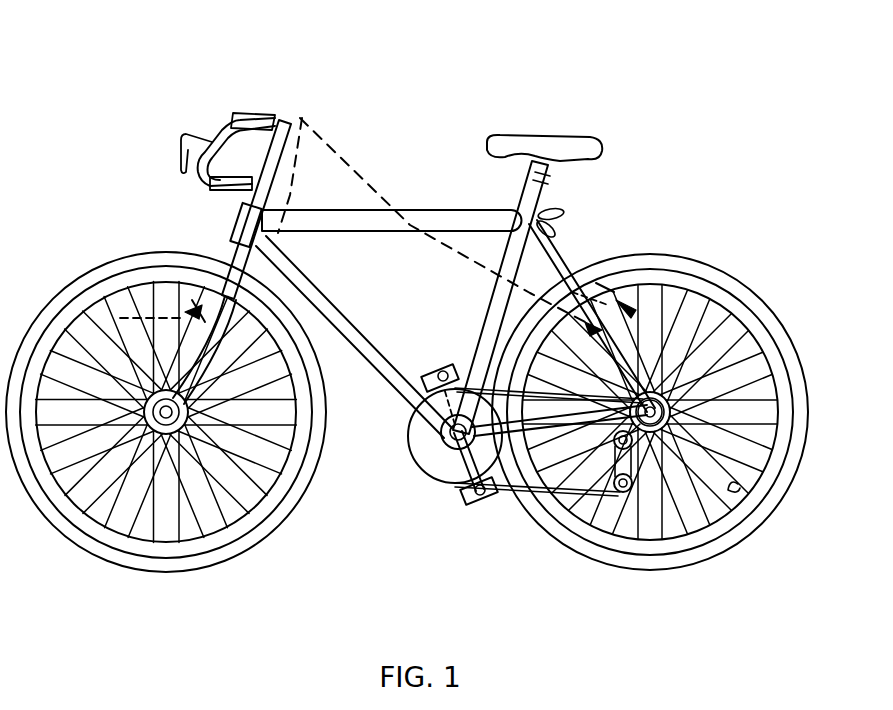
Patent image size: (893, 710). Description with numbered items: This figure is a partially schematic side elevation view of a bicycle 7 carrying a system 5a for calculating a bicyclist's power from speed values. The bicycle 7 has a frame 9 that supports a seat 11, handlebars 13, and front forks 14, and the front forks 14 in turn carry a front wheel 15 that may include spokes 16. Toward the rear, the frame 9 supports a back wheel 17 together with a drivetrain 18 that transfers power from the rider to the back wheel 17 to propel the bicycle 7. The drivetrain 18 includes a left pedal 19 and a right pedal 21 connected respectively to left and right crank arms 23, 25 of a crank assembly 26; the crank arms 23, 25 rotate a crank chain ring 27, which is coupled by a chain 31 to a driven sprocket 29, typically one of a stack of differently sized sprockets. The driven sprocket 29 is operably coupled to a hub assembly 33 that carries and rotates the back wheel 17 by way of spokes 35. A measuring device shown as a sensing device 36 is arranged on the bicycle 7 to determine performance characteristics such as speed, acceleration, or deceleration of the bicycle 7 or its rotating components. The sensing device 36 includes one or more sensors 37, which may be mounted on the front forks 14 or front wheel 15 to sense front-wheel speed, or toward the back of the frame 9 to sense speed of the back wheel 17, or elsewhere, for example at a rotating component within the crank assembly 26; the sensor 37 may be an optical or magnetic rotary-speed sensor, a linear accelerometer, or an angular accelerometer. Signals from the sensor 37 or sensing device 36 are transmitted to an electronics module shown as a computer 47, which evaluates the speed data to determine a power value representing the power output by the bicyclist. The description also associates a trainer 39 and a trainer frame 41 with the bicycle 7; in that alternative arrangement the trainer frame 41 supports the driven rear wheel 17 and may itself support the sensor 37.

The system 5a is at (228, 96).
The computer 47 is at (254, 106).
The handlebars 13 is at (213, 137).
The front forks 14 is at (232, 262).
The frame 9 is at (414, 204).
The seat 11 is at (548, 140).
The bicycle 7 is at (576, 240).
The sensor 37 is at (134, 245).
The sensing device 36 is at (56, 279).
The trainer frame 41 is at (700, 330).
The hub assembly 33 is at (722, 318).
The driven sprocket 29 is at (672, 399).
The back wheel 17 is at (805, 428).
The spokes 35 is at (735, 497).
The front wheel 15 is at (52, 522).
The spokes 16 is at (222, 500).
The drivetrain 18 is at (390, 414).
The right crank arm 25 is at (404, 438).
The crank chain ring 27 is at (428, 468).
The crank assembly 26 is at (440, 478).
The left pedal 19 is at (480, 506).
The right pedal 21 is at (455, 362).
The left crank arm 23 is at (503, 488).
The chain 31 is at (572, 495).
The trainer 39 is at (636, 450).